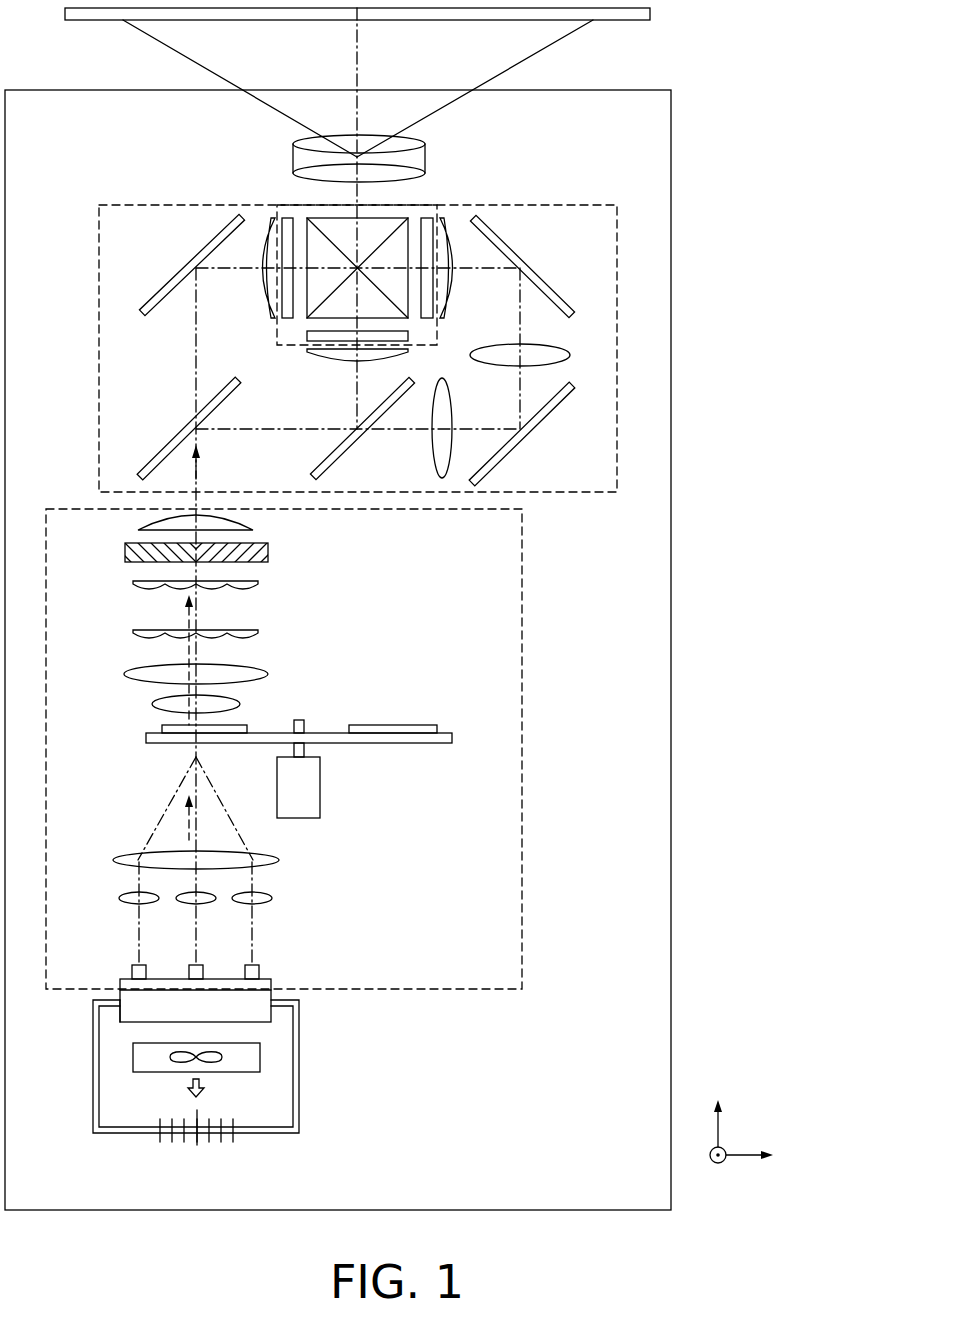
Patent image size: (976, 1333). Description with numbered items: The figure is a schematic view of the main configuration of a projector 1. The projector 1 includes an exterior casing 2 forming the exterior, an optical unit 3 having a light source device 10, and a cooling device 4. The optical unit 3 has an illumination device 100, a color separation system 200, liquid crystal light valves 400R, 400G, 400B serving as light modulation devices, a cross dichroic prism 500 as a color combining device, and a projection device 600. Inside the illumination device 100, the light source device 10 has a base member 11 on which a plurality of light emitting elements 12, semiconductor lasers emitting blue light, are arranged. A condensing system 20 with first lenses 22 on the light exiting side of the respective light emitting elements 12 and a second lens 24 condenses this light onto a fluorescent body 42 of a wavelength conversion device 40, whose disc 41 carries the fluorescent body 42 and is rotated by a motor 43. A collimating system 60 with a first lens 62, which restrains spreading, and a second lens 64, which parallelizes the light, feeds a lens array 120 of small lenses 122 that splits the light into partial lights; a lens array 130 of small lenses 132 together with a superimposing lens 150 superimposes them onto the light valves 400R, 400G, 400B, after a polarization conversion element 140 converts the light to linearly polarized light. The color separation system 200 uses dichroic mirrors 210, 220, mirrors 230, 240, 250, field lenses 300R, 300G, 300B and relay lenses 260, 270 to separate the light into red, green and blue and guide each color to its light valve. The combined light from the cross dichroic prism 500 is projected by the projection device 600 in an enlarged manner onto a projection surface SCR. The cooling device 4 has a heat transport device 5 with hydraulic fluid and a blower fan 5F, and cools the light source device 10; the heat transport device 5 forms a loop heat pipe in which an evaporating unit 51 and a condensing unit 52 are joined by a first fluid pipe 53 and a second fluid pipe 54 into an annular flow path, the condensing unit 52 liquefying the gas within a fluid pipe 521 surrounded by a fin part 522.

The projector 1 is at (368, 644).
The exterior casing 2 is at (671, 272).
The optical unit 3 is at (66, 374).
The cooling device 4 is at (224, 1102).
The heat transport device 5 is at (224, 1102).
The blower fan 5F is at (230, 1066).
The light source device 10 is at (245, 973).
The base member 11 is at (265, 983).
The light emitting elements 12 is at (266, 975).
The condensing system 20 is at (246, 875).
The first lenses 22 is at (225, 895).
The second lens 24 is at (279, 860).
The wavelength conversion device 40 is at (323, 737).
The disc 41 is at (436, 724).
The fluorescent body 42 is at (405, 724).
The motor 43 is at (321, 782).
The evaporating unit 51 is at (130, 1013).
The condensing unit 52 is at (213, 1157).
The fluid pipe 521 is at (204, 1130).
The fin part 522 is at (236, 1138).
The first fluid pipe 53 is at (299, 1086).
The second fluid pipe 54 is at (97, 1090).
The collimating system 60 is at (246, 688).
The first lens 62 is at (240, 703).
The second lens 64 is at (268, 674).
The illumination device 100 is at (522, 540).
The lens array 120 is at (203, 634).
The small lenses 122 is at (140, 634).
The lens array 130 is at (203, 586).
The small lenses 132 is at (140, 586).
The polarization conversion element 140 is at (270, 551).
The superimposing lens 150 is at (253, 525).
The color separation system 200 is at (99, 232).
The dichroic mirror 210 is at (165, 456).
The dichroic mirror 220 is at (360, 435).
The mirror 230 is at (167, 287).
The mirror 240 is at (546, 417).
The mirror 250 is at (547, 287).
The relay lens 260 is at (432, 437).
The relay lens 270 is at (538, 345).
The field lens 300R is at (268, 215).
The field lens 300G is at (315, 364).
The field lens 300B is at (446, 215).
The liquid crystal light valve 400R is at (287, 215).
The liquid crystal light valve 400G is at (303, 336).
The liquid crystal light valve 400B is at (427, 215).
The cross dichroic prism 500 is at (400, 320).
The projection device 600 is at (293, 152).
The projection surface SCR is at (628, 25).